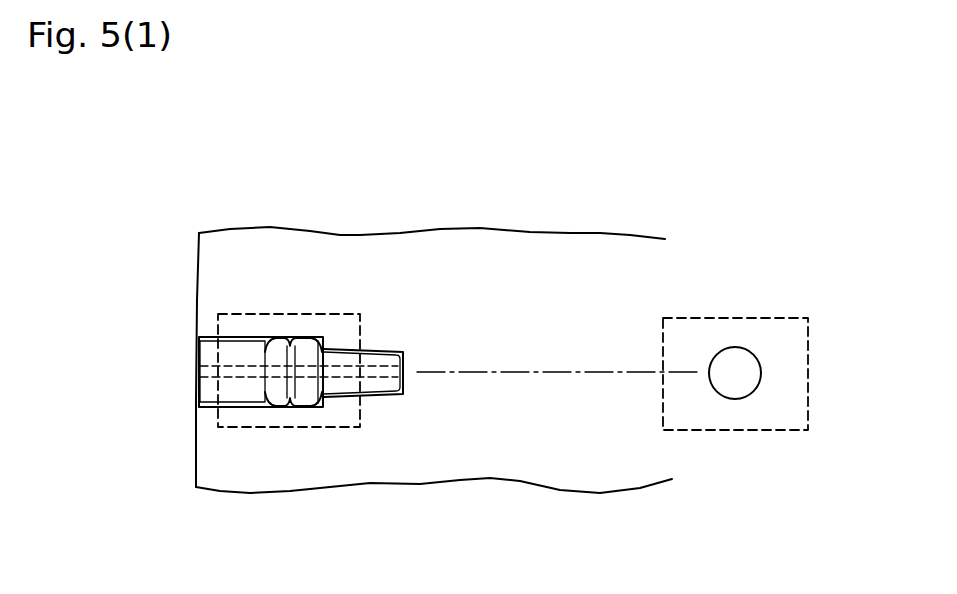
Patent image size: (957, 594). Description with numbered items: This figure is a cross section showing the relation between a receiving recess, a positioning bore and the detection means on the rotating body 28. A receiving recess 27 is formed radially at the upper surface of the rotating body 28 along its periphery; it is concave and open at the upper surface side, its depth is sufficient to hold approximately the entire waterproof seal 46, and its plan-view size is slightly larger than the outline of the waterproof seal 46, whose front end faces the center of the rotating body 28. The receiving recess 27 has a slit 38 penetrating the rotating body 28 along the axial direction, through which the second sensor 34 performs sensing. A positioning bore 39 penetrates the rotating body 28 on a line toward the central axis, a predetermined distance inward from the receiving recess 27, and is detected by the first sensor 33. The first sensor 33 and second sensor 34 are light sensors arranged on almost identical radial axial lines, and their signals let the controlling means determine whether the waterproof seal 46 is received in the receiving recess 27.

The rotating body 28 is at (420, 260).
The receiving recess 27 is at (206, 347).
The waterproof seal 46 is at (205, 390).
The slit 38 is at (205, 373).
The second sensor 34 is at (262, 428).
The positioning bore 39 is at (750, 357).
The first sensor 33 is at (742, 432).